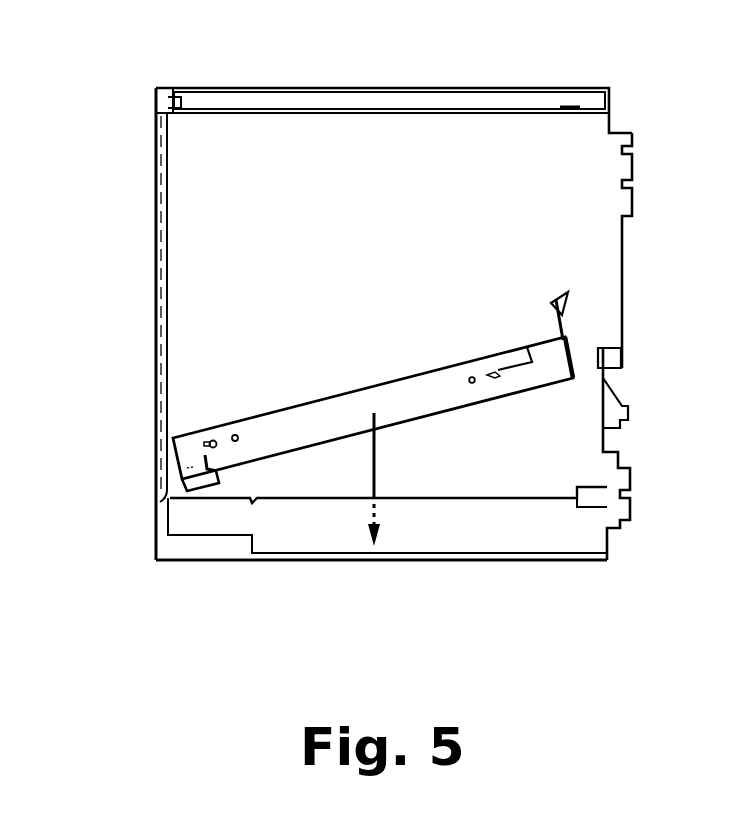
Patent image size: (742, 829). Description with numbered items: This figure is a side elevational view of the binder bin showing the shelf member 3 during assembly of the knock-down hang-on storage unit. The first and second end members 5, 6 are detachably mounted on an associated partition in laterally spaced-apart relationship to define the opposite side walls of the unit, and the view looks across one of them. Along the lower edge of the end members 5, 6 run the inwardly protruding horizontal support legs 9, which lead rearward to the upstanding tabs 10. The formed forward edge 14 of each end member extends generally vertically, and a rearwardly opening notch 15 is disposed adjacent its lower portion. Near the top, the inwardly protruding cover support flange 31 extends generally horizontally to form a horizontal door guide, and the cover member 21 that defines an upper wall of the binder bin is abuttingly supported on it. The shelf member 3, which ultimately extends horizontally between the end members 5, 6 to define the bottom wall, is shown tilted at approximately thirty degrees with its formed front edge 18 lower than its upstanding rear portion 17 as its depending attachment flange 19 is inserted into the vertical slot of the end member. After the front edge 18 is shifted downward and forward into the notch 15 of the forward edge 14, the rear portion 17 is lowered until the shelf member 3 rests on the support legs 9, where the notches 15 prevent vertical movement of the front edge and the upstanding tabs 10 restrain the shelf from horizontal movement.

The shelf member 3 is at (375, 385).
The first end member 5 is at (596, 330).
The second end member 6 is at (478, 203).
The horizontal support legs 9 is at (472, 497).
The upstanding tabs 10 is at (592, 496).
The formed forward edges 14 is at (165, 263).
The rearwardly opening notches 15 is at (160, 508).
The upstanding rear portion 17 is at (565, 330).
The formed front edge 18 is at (178, 459).
The first depending attachment flange 19 is at (443, 395).
The cover member 21 is at (379, 88).
The cover support flange 31 is at (328, 110).